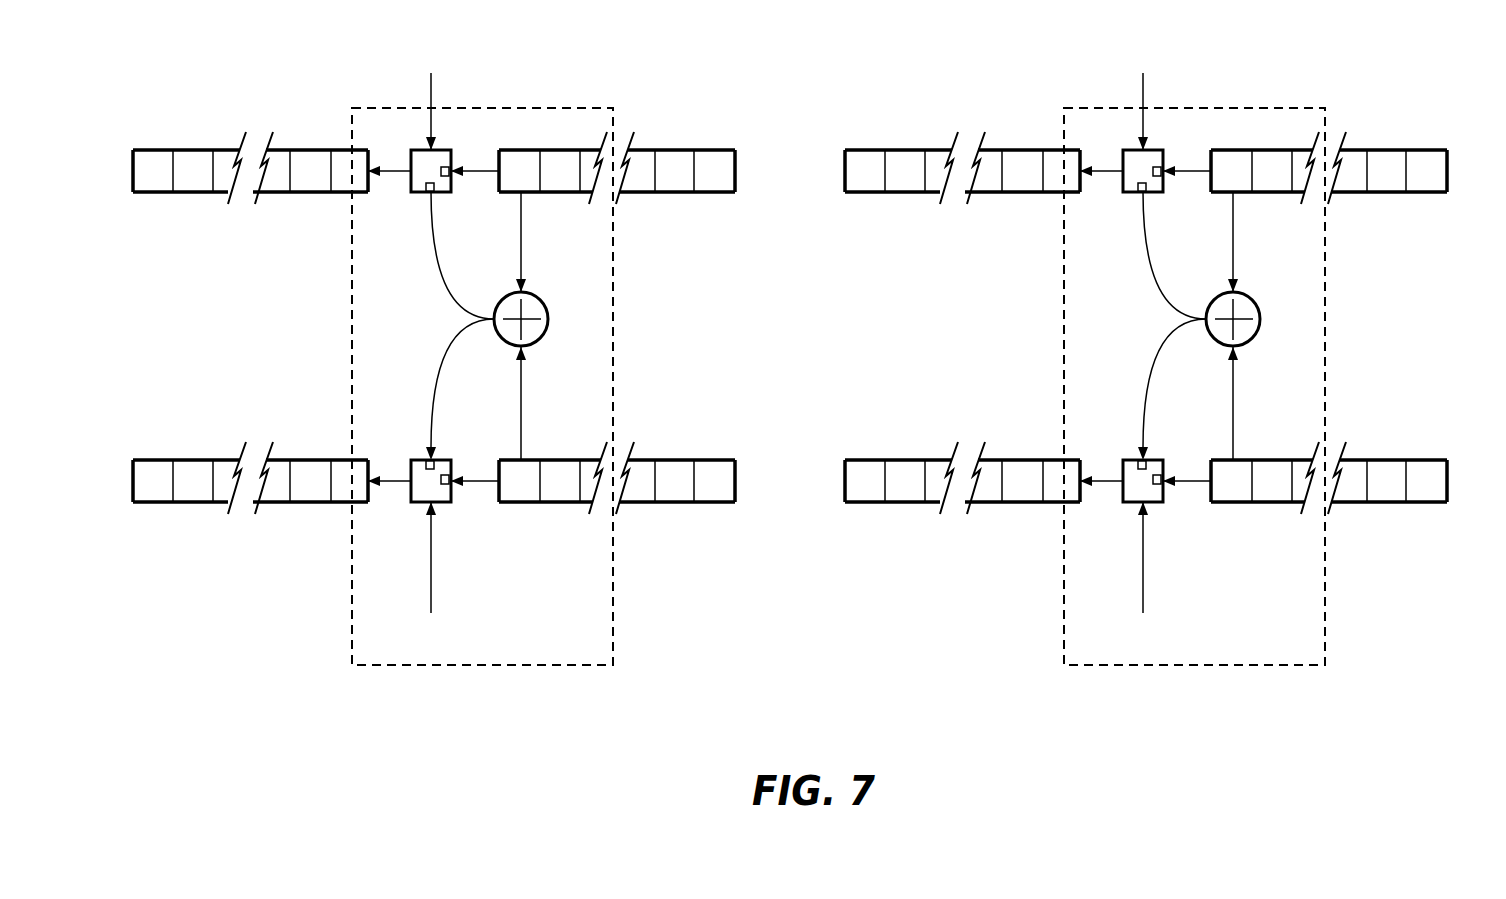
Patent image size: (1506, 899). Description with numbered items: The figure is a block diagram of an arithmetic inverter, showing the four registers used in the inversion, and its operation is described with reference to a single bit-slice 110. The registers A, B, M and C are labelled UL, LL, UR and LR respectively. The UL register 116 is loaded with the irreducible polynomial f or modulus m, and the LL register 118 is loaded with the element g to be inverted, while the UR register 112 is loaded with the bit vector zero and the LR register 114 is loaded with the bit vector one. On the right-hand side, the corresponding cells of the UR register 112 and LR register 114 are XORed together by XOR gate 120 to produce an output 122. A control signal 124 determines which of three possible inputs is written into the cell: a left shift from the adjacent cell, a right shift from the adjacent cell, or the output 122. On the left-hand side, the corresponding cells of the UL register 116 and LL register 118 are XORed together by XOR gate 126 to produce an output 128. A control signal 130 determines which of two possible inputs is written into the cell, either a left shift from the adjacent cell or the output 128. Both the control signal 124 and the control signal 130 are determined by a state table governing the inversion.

The bit-slice 110 is at (557, 107).
The UR register 112 is at (1428, 150).
The LR register 114 is at (1428, 460).
The UL register 116 is at (716, 150).
The LL register 118 is at (716, 460).
The XOR gate 120 is at (1261, 312).
The output 122 is at (1152, 273).
The control signal 124 is at (1143, 97).
The XOR gate 126 is at (549, 312).
The output 128 is at (440, 273).
The control signal 130 is at (431, 97).